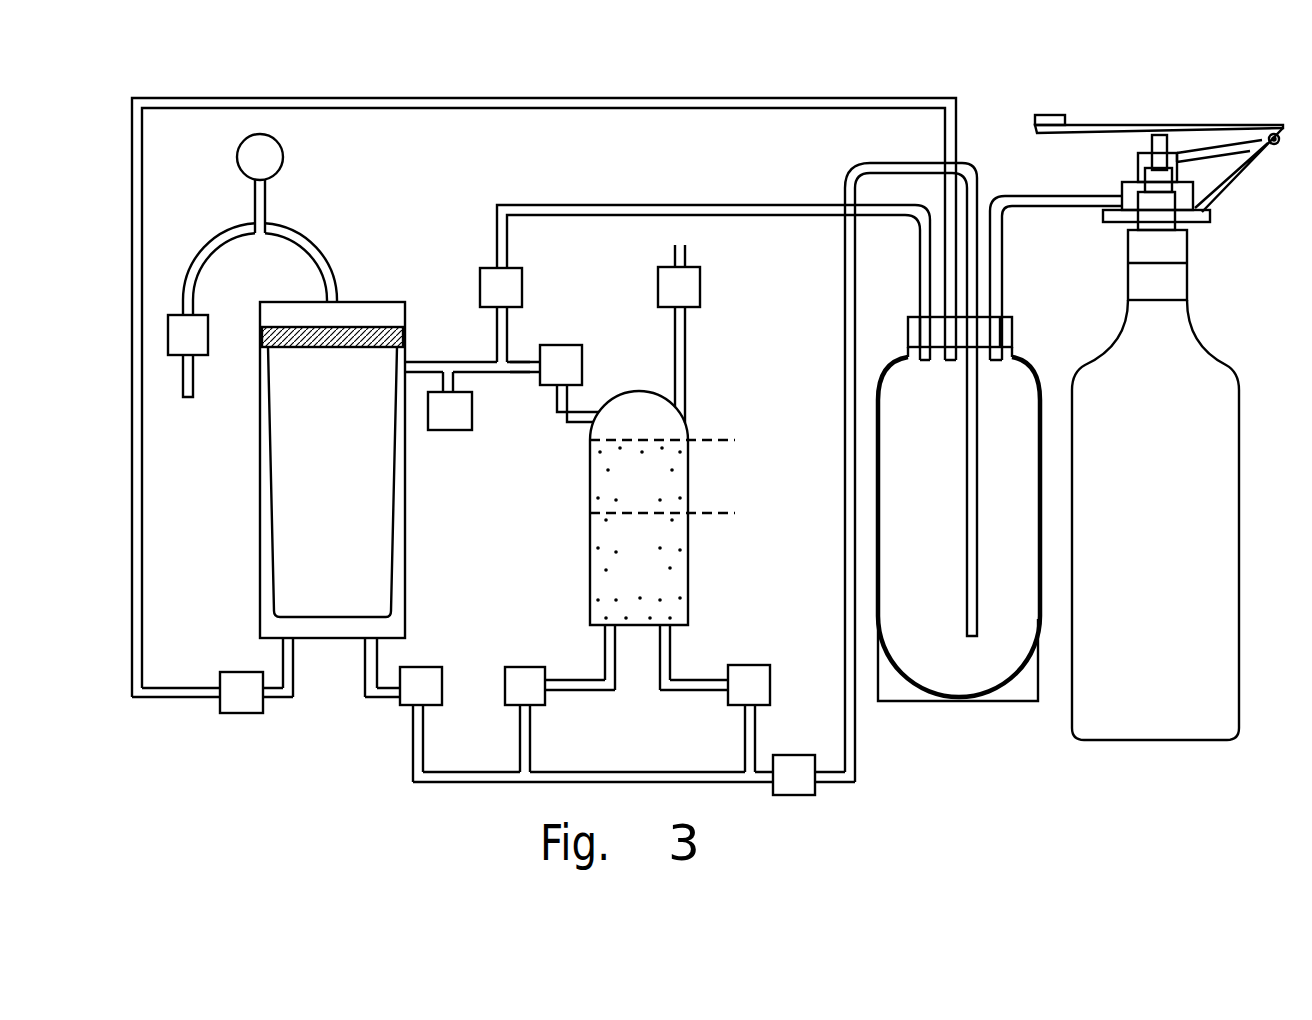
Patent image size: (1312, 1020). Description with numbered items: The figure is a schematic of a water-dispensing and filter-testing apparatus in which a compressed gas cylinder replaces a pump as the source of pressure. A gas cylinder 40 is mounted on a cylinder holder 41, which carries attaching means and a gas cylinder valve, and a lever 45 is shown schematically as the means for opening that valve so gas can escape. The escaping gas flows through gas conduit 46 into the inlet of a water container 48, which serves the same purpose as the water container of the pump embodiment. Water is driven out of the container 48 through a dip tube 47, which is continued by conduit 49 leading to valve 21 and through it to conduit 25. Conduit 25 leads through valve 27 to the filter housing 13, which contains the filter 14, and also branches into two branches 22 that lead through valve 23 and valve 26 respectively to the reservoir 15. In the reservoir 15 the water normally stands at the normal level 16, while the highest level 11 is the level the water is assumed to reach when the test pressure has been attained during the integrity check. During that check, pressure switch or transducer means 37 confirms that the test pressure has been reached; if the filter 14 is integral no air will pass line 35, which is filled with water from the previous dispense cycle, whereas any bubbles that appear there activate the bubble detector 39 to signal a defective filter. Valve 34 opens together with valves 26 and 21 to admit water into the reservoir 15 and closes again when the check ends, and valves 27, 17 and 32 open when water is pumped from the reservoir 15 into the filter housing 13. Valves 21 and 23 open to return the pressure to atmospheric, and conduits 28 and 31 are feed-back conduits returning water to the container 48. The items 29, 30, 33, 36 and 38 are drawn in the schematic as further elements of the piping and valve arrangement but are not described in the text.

The highest water level 11 is at (681, 437).
The filter housing 13 is at (256, 568).
The filter 14 is at (290, 500).
The reservoir 15 is at (672, 595).
The normal level 16 is at (681, 513).
The valve 17 is at (690, 280).
The valve 21 is at (797, 788).
The branches 22 is at (753, 748).
The valve 23 is at (754, 679).
The conduit 25 is at (462, 778).
The valve 26 is at (528, 672).
The valve 27 is at (427, 683).
The exit pipe 28 is at (134, 702).
The valve 29 is at (240, 706).
The conduit 30 is at (449, 361).
The feed-back conduit 31 is at (500, 252).
The valve 32 is at (513, 282).
The conduit 33 is at (577, 418).
The valve 34 is at (574, 351).
The bubble detection conduit 35 is at (300, 234).
The valve 36 is at (198, 343).
The pressure switch or transducer means 37 is at (450, 420).
The junction 38 is at (521, 366).
The bubble detector 39 is at (278, 160).
The gas cylinder 40 is at (1156, 713).
The cylinder holder 41 is at (1170, 213).
The lever 45 is at (1152, 122).
The gas conduit 46 is at (1073, 205).
The dip tube 47 is at (969, 640).
The water container 48 is at (994, 661).
The conduit 49 is at (850, 745).